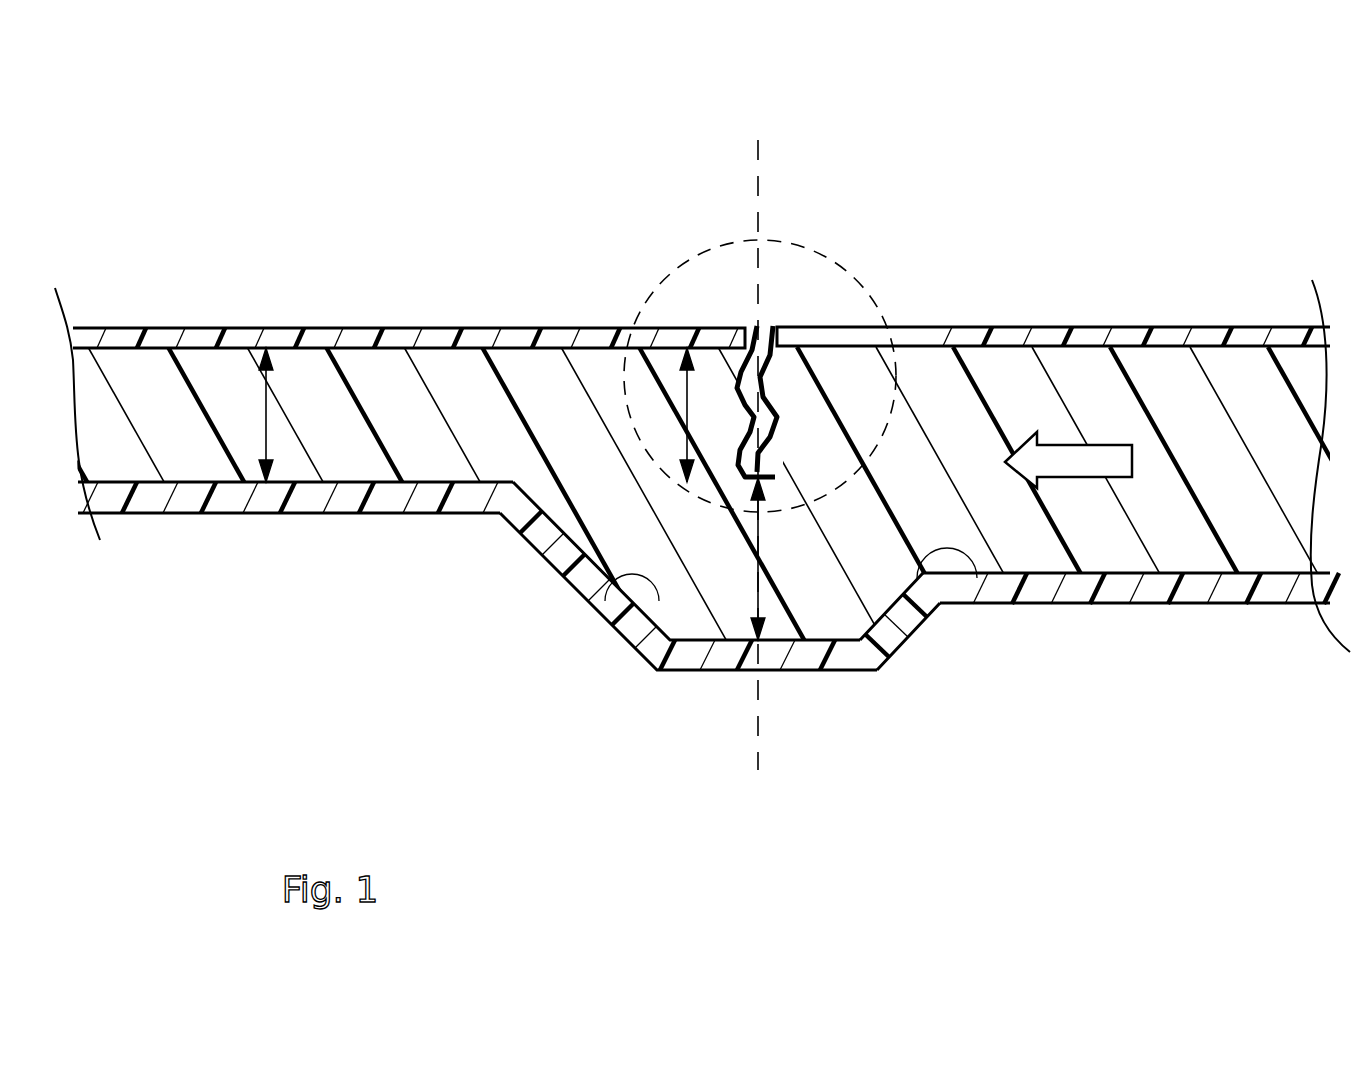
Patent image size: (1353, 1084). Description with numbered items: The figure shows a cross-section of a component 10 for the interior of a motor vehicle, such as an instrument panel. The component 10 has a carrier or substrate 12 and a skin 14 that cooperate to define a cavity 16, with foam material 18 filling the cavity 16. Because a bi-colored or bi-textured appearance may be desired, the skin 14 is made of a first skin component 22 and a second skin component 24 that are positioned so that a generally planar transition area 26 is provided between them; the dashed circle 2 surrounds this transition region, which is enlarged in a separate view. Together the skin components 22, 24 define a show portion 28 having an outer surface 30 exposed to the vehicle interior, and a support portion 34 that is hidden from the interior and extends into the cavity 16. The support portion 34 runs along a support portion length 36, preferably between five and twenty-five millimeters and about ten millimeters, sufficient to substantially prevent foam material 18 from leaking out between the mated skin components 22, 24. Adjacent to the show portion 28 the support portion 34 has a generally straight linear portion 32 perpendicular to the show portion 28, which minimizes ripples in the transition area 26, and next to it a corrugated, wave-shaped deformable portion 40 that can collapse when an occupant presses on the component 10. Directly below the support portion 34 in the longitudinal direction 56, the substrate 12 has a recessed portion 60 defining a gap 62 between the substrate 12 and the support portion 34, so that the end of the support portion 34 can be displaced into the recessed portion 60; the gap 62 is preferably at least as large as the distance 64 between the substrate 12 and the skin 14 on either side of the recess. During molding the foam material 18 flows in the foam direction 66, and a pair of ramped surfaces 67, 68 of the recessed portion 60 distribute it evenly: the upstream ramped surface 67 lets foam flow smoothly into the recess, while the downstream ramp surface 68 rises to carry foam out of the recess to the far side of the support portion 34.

The component 10 is at (243, 195).
The substrate 12 is at (295, 513).
The skin 14 is at (322, 336).
The cavity 16 is at (386, 372).
The foam material 18 is at (458, 430).
The first skin component 22 is at (545, 336).
The support portion length 36 is at (640, 330).
The linear portion 32 is at (703, 333).
The transition area 26 is at (744, 345).
The support portion 34 is at (802, 368).
The show portion 28 is at (958, 327).
The outer surface 30 is at (1080, 325).
The second skin component 24 is at (1163, 335).
The deformable portion 40 is at (783, 433).
The recessed portion 60 is at (622, 515).
The gap 62 is at (758, 603).
The core thickness 64 is at (266, 425).
The foam direction 66 is at (1040, 478).
The upstream ramped surface 67 is at (975, 575).
The downstream ramp surface 68 is at (613, 593).
The longitudinal direction 56 is at (760, 216).
The detail region 2 is at (816, 258).